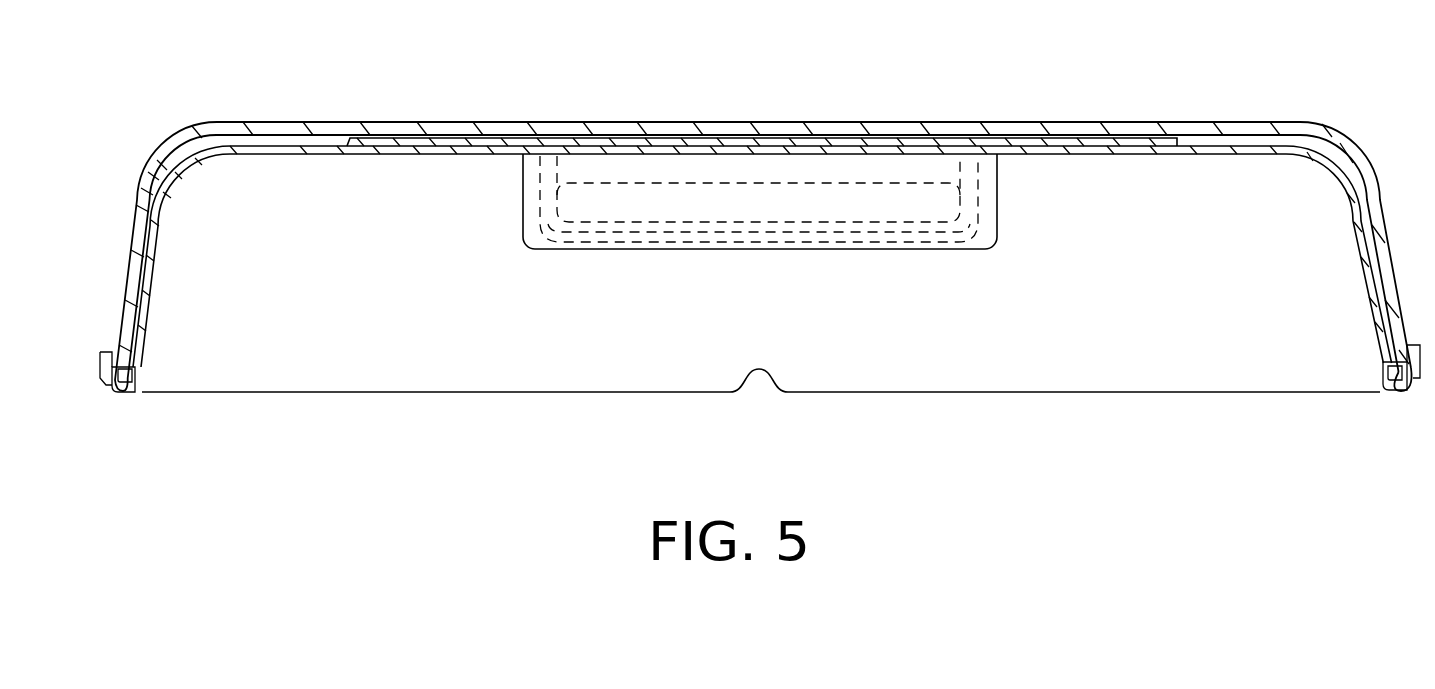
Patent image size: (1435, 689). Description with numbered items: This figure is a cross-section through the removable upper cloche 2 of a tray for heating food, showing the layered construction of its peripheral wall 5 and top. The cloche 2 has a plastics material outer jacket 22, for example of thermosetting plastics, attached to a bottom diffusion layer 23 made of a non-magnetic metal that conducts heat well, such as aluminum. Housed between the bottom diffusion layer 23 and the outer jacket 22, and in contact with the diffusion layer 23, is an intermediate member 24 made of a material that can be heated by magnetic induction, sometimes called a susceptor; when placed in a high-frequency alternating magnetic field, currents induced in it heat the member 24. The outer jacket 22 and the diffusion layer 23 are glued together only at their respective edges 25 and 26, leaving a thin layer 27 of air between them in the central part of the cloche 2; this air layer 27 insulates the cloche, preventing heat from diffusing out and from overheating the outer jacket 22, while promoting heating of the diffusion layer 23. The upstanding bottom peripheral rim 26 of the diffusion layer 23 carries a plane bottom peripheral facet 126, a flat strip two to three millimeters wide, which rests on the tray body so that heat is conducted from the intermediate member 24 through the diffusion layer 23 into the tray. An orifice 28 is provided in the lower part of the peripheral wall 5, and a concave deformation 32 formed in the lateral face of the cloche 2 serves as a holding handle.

The cloche 2 is at (831, 110).
The peripheral wall 5 is at (143, 182).
The outer jacket 22 is at (393, 122).
The bottom diffusion layer 23 is at (420, 155).
The intermediate member 24 is at (470, 138).
The edge of outer jacket 25 is at (115, 346).
The upstanding bottom peripheral rim 26 is at (110, 392).
The thin layer of air 27 is at (237, 143).
The orifice 28 is at (768, 395).
The concave deformation 32 is at (926, 185).
The plane bottom peripheral facet 126 is at (125, 393).